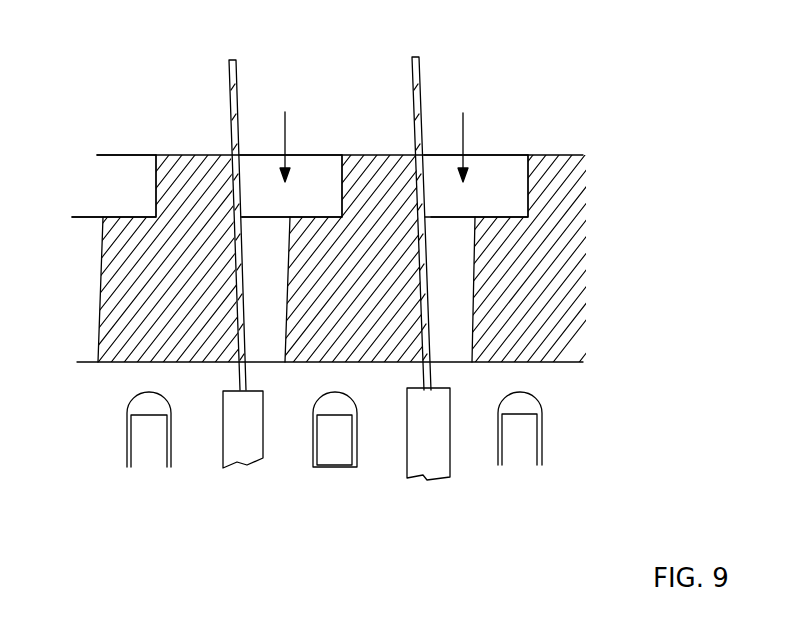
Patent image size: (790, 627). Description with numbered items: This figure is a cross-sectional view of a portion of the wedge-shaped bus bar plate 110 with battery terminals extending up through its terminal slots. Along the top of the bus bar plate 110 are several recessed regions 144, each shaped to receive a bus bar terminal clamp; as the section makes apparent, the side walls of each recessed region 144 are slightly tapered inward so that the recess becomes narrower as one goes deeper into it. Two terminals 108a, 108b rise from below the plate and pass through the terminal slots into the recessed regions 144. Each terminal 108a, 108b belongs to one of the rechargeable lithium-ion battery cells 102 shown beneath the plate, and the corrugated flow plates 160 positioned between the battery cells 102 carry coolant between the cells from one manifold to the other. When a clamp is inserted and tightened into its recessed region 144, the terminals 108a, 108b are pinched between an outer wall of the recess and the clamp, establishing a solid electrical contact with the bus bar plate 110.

The bus bar plate 110 is at (573, 228).
The recessed region 144 is at (120, 165).
The terminal 108a is at (233, 60).
The terminal 108b is at (416, 57).
The battery cell 102 is at (235, 446).
The corrugated flow plate 160 is at (138, 447).